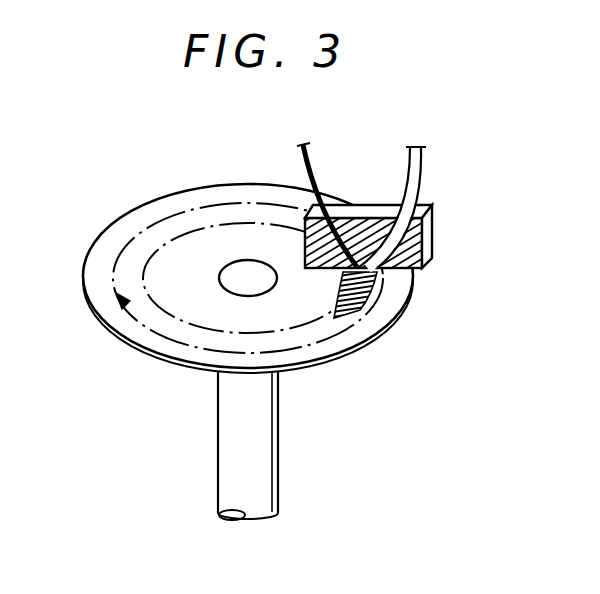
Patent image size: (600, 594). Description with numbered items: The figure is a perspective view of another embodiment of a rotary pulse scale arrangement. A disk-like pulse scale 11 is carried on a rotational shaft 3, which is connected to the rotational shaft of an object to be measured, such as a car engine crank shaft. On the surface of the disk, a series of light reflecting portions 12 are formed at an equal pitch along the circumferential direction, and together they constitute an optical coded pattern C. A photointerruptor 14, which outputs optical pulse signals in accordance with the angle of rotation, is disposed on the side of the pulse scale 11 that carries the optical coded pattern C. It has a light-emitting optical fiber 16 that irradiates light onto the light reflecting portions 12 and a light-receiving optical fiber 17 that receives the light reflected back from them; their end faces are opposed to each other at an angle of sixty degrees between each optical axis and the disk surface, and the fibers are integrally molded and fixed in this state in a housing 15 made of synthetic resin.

The rotational shaft 3 is at (278, 452).
The pulse scale 11 is at (140, 203).
The light reflecting portion 12 is at (337, 320).
The photointerruptor 14 is at (438, 225).
The housing 15 is at (408, 258).
The light-emitting optical fiber 16 is at (302, 156).
The light-receiving optical fiber 17 is at (422, 167).
The optical coded pattern C is at (118, 298).